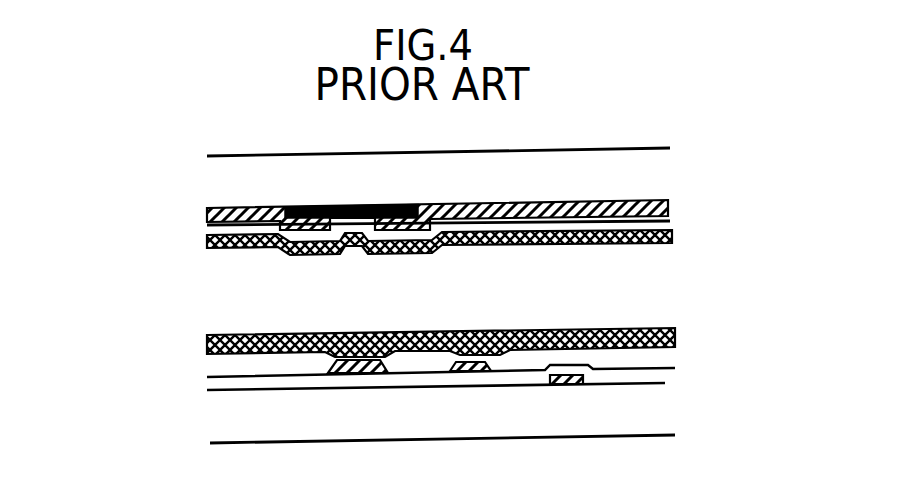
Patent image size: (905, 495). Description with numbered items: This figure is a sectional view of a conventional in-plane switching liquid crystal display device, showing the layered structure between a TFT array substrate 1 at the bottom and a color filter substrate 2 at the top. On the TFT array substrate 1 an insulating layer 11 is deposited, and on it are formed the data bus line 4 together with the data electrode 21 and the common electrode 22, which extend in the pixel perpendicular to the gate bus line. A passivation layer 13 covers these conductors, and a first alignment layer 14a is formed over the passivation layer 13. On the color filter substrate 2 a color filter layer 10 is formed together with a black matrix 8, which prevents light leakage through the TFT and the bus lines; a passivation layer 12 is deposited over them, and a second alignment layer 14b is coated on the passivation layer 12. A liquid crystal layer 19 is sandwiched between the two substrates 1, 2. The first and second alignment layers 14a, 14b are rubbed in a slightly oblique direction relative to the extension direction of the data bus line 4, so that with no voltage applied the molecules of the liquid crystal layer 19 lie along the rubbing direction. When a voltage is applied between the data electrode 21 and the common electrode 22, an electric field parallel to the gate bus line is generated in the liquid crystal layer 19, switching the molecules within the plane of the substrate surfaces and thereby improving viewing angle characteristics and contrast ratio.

The TFT array substrate 1 is at (648, 422).
The color filter substrate 2 is at (652, 153).
The data bus line 4 is at (343, 374).
The black matrix 8 is at (346, 205).
The color filter layer 10 is at (663, 201).
The insulating layer 11 is at (665, 383).
The passivation layer 12 is at (670, 221).
The passivation layer 13 is at (663, 358).
The first alignment layer 14a is at (208, 347).
The second alignment layer 14b is at (668, 243).
The liquid crystal layer 19 is at (237, 291).
The data electrode 21 is at (458, 373).
The common electrode 22 is at (572, 385).